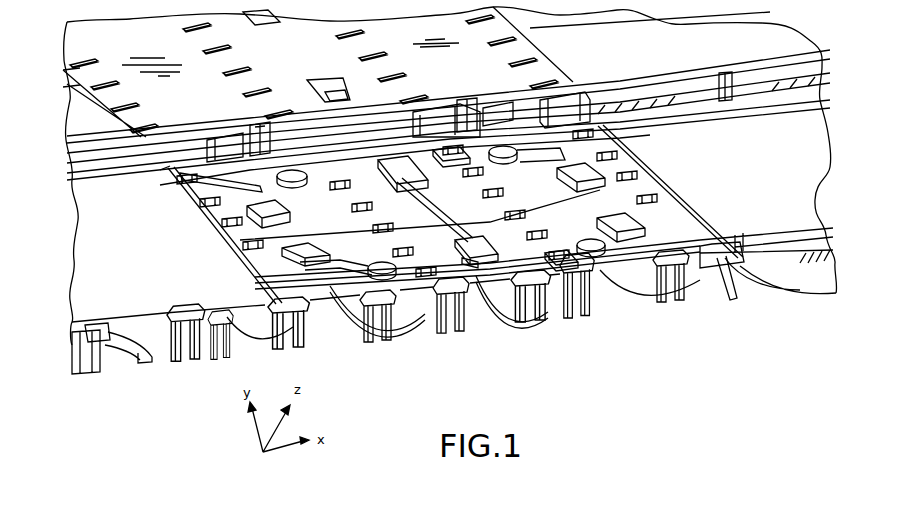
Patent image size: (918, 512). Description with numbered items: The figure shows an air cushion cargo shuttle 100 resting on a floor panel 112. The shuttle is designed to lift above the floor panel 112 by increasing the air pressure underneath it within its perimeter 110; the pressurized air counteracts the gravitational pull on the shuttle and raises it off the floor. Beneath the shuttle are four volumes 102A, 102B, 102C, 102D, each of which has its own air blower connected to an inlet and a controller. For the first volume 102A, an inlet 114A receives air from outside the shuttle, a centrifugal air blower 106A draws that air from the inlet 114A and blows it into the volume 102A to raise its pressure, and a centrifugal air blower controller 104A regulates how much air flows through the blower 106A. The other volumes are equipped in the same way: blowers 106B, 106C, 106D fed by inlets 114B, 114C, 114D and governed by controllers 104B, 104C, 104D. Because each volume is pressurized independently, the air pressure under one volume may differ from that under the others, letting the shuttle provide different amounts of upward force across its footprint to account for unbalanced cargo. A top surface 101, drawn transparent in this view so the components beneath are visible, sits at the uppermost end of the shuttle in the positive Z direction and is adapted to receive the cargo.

The air cushion cargo shuttle 100 is at (181, 203).
The top surface 101 is at (597, 280).
The volume 102A is at (552, 258).
The volume 102B is at (434, 158).
The volume 102C is at (372, 173).
The volume 102D is at (473, 262).
The centrifugal air blower controller 104A is at (655, 212).
The centrifugal air blower controller 104B is at (640, 166).
The centrifugal air blower controller 104C is at (247, 217).
The centrifugal air blower controller 104D is at (318, 254).
The centrifugal air blower 106A is at (605, 252).
The centrifugal air blower 106B is at (498, 147).
The centrifugal air blower 106C is at (298, 172).
The centrifugal air blower 106D is at (392, 275).
The perimeter 110 is at (240, 260).
The floor panel 112 is at (75, 302).
The inlet 114A is at (712, 233).
The inlet 114B is at (632, 142).
The inlet 114C is at (182, 190).
The inlet 114D is at (277, 298).